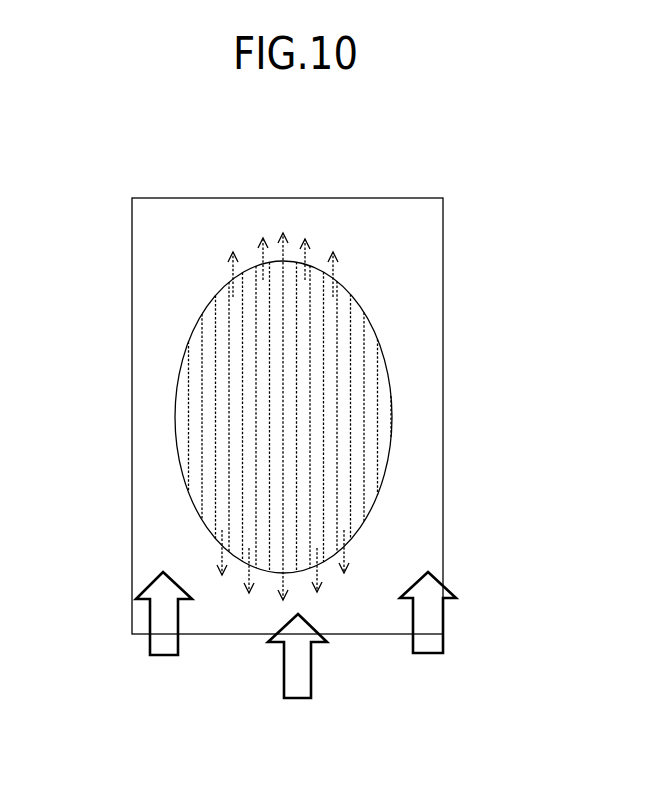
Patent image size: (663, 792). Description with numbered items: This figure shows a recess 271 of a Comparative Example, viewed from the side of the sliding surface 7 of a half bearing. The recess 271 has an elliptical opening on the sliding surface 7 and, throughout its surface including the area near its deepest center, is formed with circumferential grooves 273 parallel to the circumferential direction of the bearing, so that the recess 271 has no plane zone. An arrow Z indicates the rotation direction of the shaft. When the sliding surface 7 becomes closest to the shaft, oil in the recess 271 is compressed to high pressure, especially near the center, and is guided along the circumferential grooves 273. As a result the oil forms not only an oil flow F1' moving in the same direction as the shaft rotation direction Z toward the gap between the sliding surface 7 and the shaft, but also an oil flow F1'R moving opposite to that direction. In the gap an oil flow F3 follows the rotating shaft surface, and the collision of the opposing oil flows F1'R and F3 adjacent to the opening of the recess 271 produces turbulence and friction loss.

The sliding surface 7 is at (232, 226).
The recess 271 is at (345, 421).
The circumferential grooves 273 is at (385, 470).
The oil flow F1' is at (359, 416).
The oil flow F1'R is at (365, 553).
The oil flow F3 is at (428, 622).
The rotation direction of the shaft Z is at (86, 572).